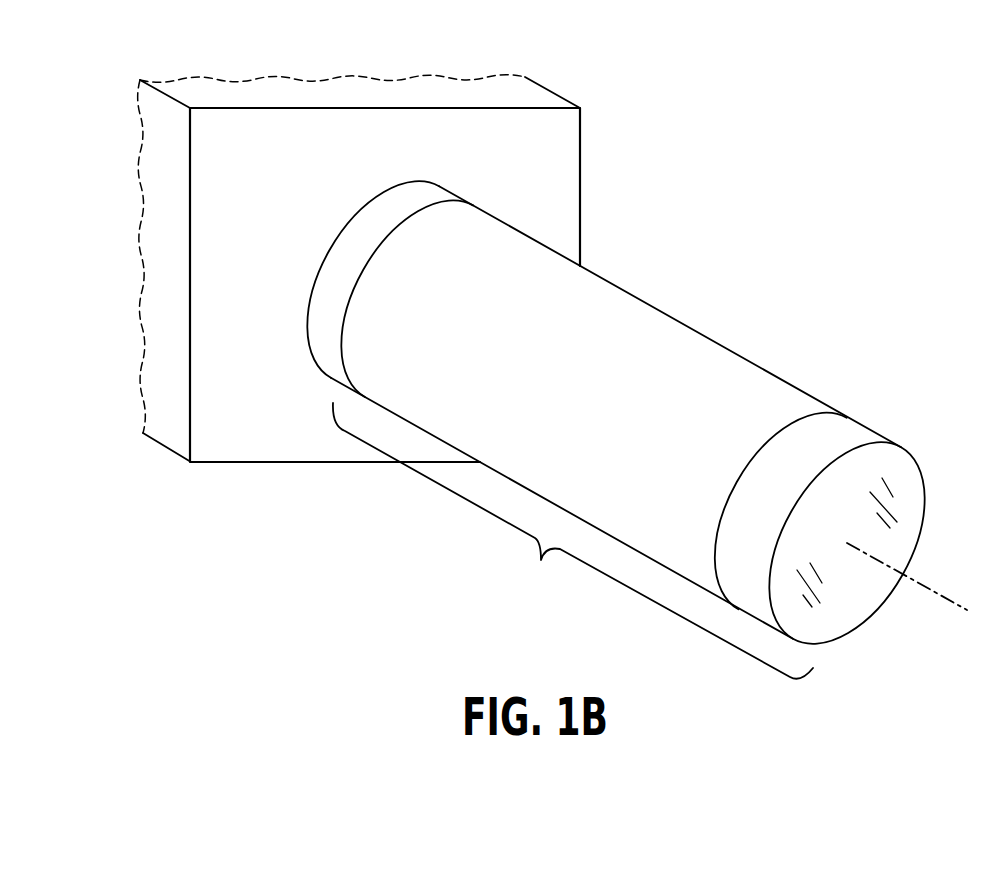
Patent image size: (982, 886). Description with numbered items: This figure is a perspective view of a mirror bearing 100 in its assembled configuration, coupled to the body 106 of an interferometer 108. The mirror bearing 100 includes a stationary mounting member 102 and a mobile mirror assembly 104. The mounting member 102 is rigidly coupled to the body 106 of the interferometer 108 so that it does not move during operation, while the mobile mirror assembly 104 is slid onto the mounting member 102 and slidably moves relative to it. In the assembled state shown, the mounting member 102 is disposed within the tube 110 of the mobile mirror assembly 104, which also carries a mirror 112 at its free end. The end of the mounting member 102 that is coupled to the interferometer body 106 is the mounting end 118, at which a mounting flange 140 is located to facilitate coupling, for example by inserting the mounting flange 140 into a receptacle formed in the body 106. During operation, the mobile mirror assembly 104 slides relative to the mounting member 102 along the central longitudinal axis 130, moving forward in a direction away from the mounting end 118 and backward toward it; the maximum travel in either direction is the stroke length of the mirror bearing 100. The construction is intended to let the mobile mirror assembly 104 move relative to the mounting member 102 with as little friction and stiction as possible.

The mirror bearing 100 is at (805, 227).
The mounting member 102 is at (337, 312).
The mobile mirror assembly 104 is at (573, 541).
The body 106 is at (210, 227).
The interferometer 108 is at (552, 88).
The tube 110 is at (745, 377).
The mirror 112 is at (862, 430).
The mounting end 118 is at (350, 223).
The central longitudinal axis 130 is at (923, 587).
The mounting flange 140 is at (427, 195).